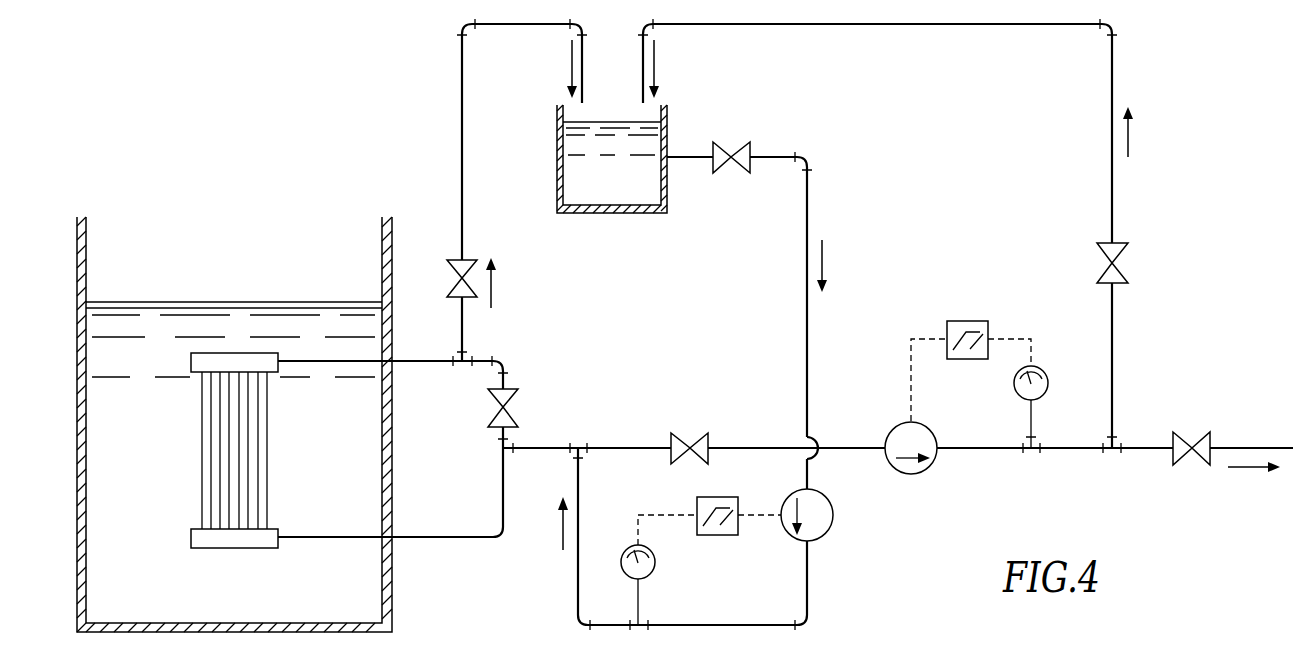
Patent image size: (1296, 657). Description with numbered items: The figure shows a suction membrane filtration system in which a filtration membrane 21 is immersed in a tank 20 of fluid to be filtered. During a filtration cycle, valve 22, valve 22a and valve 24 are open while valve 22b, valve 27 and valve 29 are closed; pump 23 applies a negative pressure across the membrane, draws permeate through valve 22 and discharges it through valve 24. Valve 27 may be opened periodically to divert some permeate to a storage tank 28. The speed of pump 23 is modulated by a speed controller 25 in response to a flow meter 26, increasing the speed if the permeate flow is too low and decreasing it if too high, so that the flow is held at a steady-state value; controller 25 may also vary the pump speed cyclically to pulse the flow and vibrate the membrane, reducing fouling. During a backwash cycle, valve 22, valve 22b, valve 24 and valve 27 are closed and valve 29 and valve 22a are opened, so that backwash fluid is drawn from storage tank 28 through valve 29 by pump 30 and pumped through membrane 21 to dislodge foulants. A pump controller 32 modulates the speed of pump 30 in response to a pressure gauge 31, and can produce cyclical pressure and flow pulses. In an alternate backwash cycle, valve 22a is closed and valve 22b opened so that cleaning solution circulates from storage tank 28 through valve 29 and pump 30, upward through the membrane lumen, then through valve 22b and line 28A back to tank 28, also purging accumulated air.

The tank 20 is at (77, 362).
The filtration membrane 21 is at (191, 537).
The valve 22 is at (700, 433).
The valve 22a is at (518, 406).
The valve 22b is at (450, 262).
The pump 23 is at (900, 422).
The valve 24 is at (1192, 432).
The speed controller 25 is at (975, 321).
The flow meter 26 is at (1046, 378).
The valve 27 is at (1128, 266).
The storage tank 28 is at (557, 155).
The line 28A is at (462, 80).
The valve 29 is at (731, 173).
The pump 30 is at (834, 520).
The pressure gauge 31 is at (640, 598).
The pump controller 32 is at (727, 497).